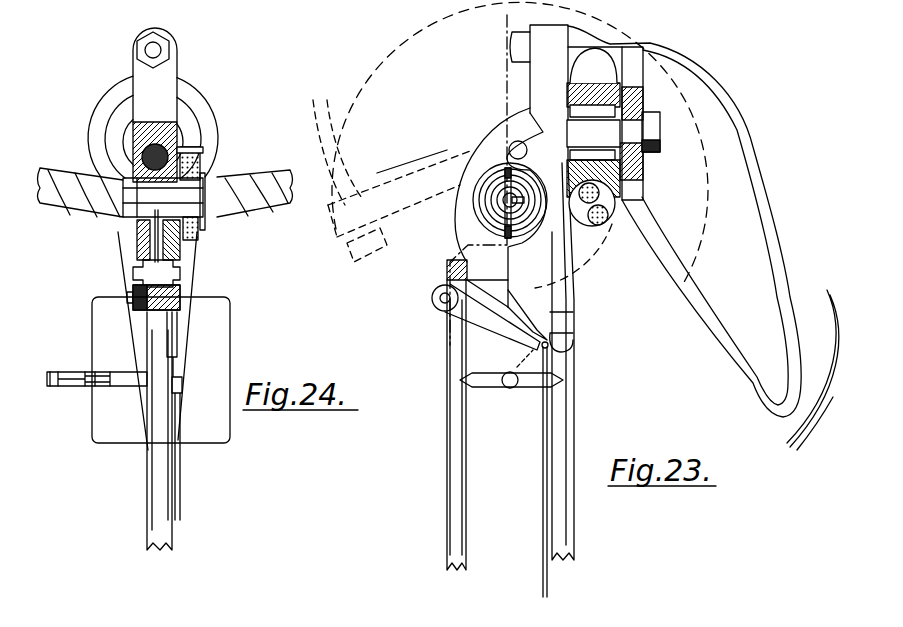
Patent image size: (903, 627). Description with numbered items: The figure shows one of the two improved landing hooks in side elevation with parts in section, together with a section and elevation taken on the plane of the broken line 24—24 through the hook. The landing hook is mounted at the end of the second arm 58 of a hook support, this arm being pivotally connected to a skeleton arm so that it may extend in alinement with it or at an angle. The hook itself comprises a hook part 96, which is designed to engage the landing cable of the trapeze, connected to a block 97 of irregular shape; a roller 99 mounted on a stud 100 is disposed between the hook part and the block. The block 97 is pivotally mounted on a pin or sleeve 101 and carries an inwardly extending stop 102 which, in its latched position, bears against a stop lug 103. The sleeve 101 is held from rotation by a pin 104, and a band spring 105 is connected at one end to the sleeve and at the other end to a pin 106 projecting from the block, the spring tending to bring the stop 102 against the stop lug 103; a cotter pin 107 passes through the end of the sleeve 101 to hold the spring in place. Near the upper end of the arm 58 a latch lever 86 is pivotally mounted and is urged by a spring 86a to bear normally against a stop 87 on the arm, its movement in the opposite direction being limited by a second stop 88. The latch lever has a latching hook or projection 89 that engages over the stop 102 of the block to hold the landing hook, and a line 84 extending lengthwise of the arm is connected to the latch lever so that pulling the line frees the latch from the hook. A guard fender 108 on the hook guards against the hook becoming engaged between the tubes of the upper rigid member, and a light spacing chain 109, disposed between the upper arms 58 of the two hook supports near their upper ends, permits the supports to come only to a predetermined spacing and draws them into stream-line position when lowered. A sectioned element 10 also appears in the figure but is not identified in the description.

In FIG. 24, the rope 10 is at (62, 208).
In FIG. 23, the rope 10 is at (606, 223).
In FIG. 23, the broken line 24— 24 is at (468, 184).
In FIG. 24, the second arm 58 is at (146, 146).
In FIG. 23, the second arm 58 is at (567, 422).
In FIG. 23, the line 84 is at (542, 460).
In FIG. 24, the latch lever 86 is at (177, 337).
In FIG. 23, the latch lever 86 is at (513, 333).
In FIG. 24, the spring 86a is at (143, 322).
In FIG. 23, the stop 87 is at (567, 326).
In FIG. 23, the second stop 88 is at (510, 388).
In FIG. 23, the latching hook or projection 89 is at (518, 308).
In FIG. 24, the hook part 96 is at (187, 313).
In FIG. 23, the hook part 96 is at (773, 212).
In FIG. 24, the block 97 is at (176, 130).
In FIG. 23, the block 97 is at (528, 113).
In FIG. 23, the roller 99 is at (625, 180).
In FIG. 23, the stud 100 is at (610, 133).
In FIG. 24, the pin or sleeve 101 is at (138, 200).
In FIG. 23, the pin or sleeve 101 is at (506, 208).
In FIG. 23, the inwardly extending stop 102 is at (497, 278).
In FIG. 24, the stop lug 103 is at (180, 273).
In FIG. 23, the stop lug 103 is at (450, 272).
In FIG. 24, the pin 104 is at (187, 257).
In FIG. 24, the band spring 105 is at (200, 236).
In FIG. 23, the band spring 105 is at (508, 197).
In FIG. 24, the pin 106 is at (205, 158).
In FIG. 23, the pin 106 is at (512, 146).
In FIG. 24, the cotter pin 107 is at (207, 203).
In FIG. 23, the cotter pin 107 is at (473, 150).
In FIG. 24, the guard fender 108 is at (207, 430).
In FIG. 23, the guard fender 108 is at (813, 433).
In FIG. 24, the spacing chain 109 is at (87, 393).